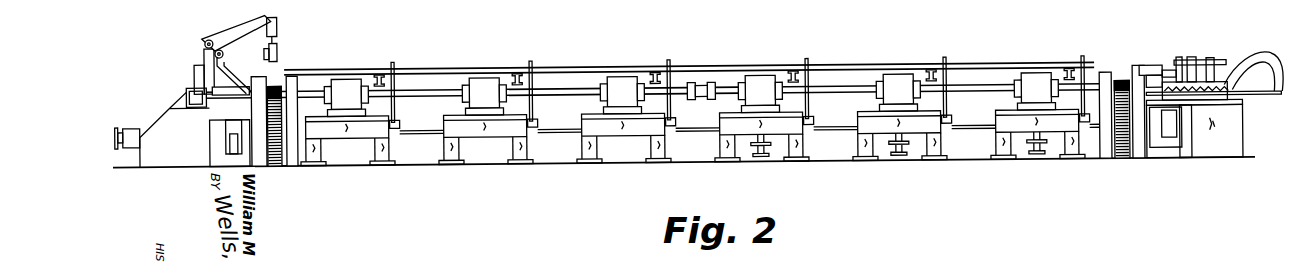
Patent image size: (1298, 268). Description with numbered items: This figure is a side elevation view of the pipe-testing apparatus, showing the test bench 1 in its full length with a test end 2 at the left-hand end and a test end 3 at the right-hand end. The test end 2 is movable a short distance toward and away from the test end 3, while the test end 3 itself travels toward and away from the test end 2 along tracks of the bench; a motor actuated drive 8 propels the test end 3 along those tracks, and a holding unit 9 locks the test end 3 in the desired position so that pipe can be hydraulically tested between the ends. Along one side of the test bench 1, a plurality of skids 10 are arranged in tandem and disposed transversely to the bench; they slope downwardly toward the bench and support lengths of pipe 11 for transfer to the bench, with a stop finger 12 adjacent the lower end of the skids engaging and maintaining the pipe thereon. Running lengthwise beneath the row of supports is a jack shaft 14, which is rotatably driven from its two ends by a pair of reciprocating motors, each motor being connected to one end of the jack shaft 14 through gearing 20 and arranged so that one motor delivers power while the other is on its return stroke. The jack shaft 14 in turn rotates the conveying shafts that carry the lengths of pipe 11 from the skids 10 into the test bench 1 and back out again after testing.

The test bench 1 is at (1155, 70).
The test end 2 is at (157, 115).
The test end 3 is at (1227, 125).
The motor actuated drive 8 is at (1243, 93).
The holding unit 9 is at (1212, 92).
The skids 10 is at (370, 76).
The lengths of pipe 11 is at (985, 65).
The stop finger 12 is at (531, 60).
The jack shaft 14 is at (573, 97).
The gearing 20 is at (271, 163).